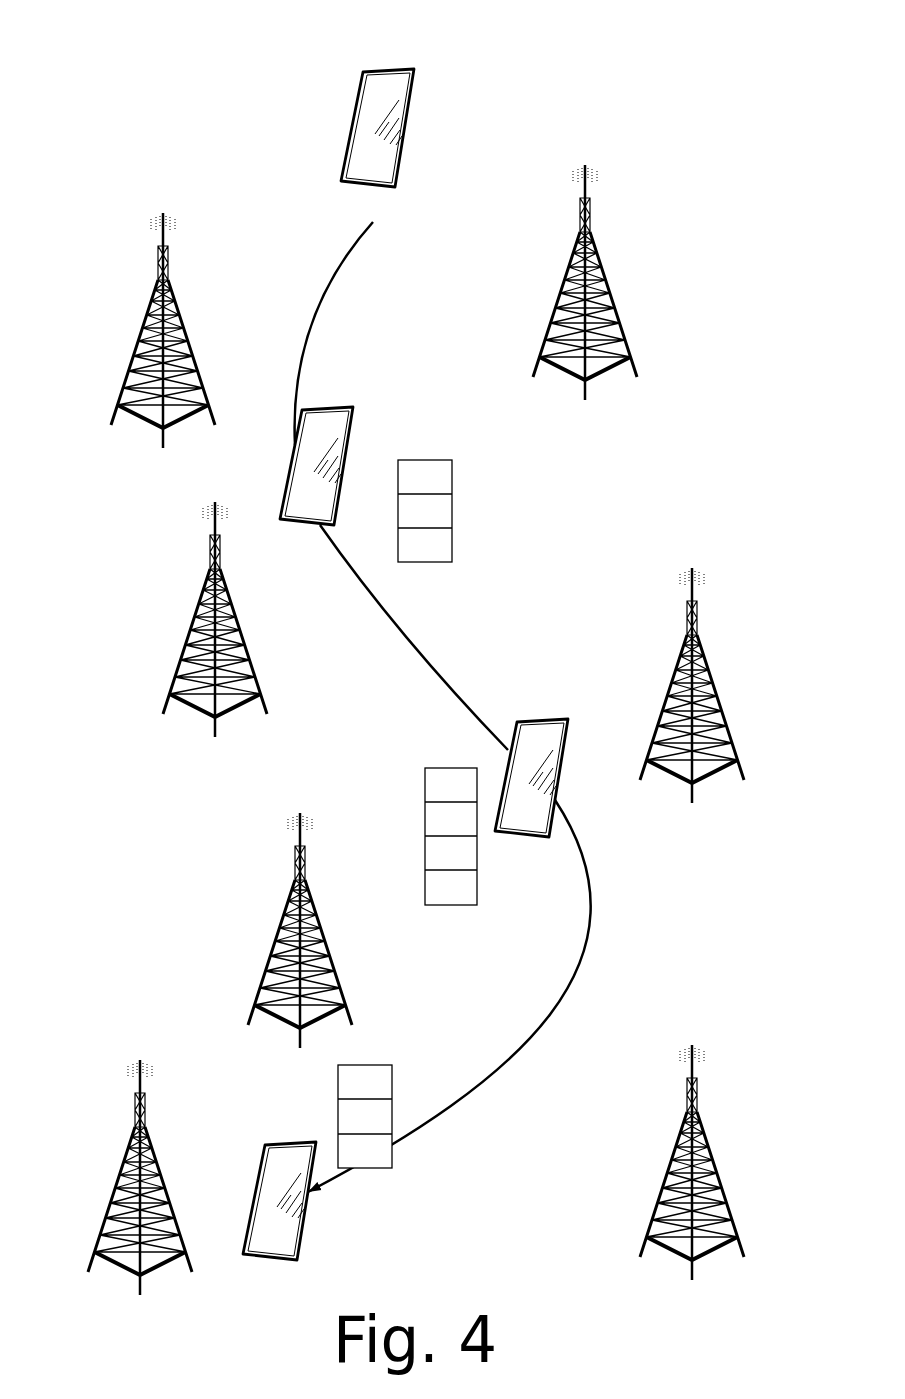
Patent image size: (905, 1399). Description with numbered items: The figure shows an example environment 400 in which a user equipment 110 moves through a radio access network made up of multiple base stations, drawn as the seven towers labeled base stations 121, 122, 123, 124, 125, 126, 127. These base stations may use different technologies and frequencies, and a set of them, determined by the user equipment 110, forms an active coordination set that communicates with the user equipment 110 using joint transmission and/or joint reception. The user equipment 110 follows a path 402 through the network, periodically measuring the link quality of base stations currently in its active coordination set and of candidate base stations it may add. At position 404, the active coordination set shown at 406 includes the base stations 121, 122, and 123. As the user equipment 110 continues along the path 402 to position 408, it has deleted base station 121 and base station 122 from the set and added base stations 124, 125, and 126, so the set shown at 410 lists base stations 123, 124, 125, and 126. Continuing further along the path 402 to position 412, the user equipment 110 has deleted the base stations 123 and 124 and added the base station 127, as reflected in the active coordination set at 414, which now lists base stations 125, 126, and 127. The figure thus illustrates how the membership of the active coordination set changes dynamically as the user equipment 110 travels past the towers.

The environment 400 is at (113, 42).
The user equipment 110 is at (425, 68).
The base station 121 is at (145, 300).
The base station 122 is at (603, 249).
The base station 123 is at (197, 587).
The base station 124 is at (711, 652).
The base station 125 is at (282, 900).
The base station 126 is at (711, 1128).
The base station 127 is at (122, 1148).
The path 402 is at (345, 258).
The position 404 is at (332, 407).
The active coordination set 406 is at (430, 458).
The position 408 is at (548, 718).
The active coordination set 410 is at (447, 767).
The position 412 is at (286, 1141).
The active coordination set 414 is at (368, 1064).